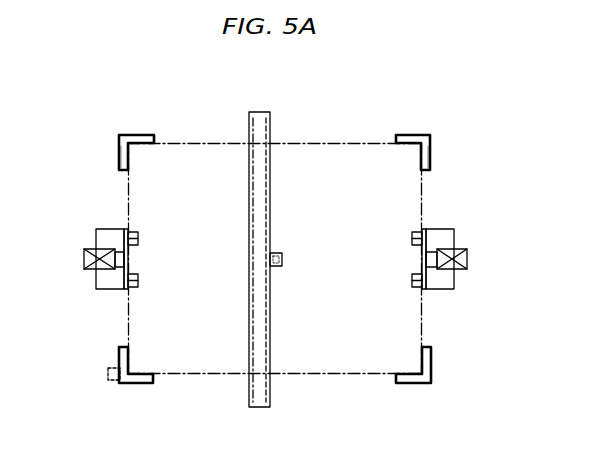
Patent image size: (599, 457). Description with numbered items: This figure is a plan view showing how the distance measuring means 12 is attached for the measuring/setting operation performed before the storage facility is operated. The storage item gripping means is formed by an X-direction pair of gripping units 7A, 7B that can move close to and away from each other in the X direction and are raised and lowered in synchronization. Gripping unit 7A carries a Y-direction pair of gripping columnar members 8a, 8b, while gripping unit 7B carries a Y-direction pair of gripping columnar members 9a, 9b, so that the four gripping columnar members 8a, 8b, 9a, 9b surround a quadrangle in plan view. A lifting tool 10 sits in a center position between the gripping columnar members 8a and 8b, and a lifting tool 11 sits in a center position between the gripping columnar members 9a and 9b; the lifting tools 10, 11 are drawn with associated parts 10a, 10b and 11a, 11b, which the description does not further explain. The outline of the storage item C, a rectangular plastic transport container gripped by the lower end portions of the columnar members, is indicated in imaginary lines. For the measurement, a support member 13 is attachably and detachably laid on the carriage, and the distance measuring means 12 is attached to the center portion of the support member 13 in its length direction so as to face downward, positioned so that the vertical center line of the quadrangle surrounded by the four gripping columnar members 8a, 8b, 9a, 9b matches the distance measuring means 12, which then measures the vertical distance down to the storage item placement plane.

The gripping unit 7A is at (142, 135).
The gripping unit 7B is at (411, 135).
The gripping columnar member 8a is at (119, 364).
The gripping columnar member 8b is at (119, 154).
The gripping columnar member 9a is at (431, 366).
The gripping columnar member 9b is at (430, 152).
The lifting tool 10 is at (103, 267).
The left clamp pins 10a is at (134, 288).
The left clamp actuator 10b is at (98, 250).
The lifting tool 11 is at (437, 262).
The right clamp pins 11a is at (416, 288).
The right clamp actuator 11b is at (456, 250).
The distance measuring means 12 is at (283, 259).
The support member 13 is at (256, 258).
The storage item C is at (308, 364).